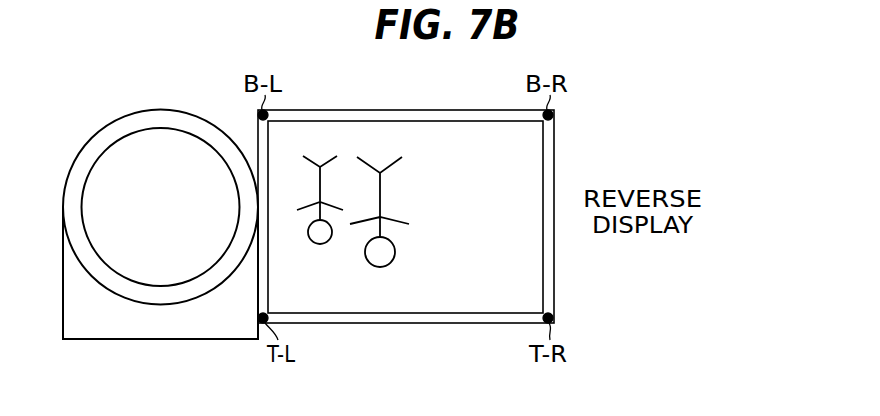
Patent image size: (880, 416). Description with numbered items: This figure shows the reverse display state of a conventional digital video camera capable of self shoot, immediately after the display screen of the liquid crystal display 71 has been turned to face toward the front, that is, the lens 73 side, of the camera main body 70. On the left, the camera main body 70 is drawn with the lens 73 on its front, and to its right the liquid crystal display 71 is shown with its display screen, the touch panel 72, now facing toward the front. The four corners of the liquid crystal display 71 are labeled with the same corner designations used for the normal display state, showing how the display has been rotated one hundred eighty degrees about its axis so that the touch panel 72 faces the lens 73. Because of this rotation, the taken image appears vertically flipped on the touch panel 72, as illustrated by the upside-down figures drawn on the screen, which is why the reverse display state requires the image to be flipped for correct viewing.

The camera main body 70 is at (160, 340).
The liquid crystal display 71 is at (554, 155).
The touch panel 72 is at (525, 263).
The lens 73 is at (155, 140).